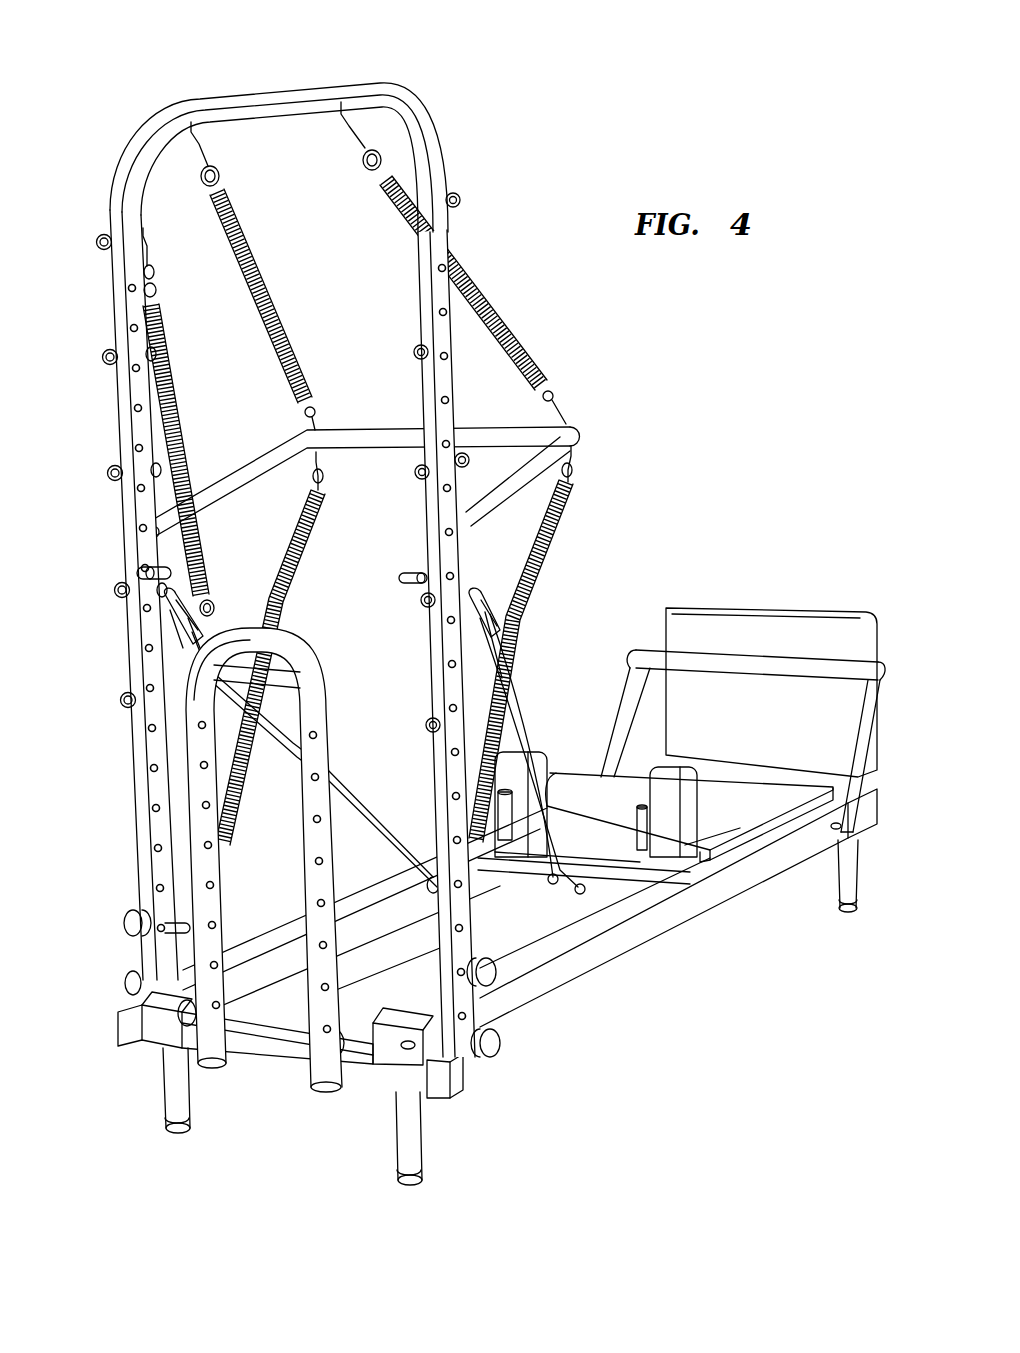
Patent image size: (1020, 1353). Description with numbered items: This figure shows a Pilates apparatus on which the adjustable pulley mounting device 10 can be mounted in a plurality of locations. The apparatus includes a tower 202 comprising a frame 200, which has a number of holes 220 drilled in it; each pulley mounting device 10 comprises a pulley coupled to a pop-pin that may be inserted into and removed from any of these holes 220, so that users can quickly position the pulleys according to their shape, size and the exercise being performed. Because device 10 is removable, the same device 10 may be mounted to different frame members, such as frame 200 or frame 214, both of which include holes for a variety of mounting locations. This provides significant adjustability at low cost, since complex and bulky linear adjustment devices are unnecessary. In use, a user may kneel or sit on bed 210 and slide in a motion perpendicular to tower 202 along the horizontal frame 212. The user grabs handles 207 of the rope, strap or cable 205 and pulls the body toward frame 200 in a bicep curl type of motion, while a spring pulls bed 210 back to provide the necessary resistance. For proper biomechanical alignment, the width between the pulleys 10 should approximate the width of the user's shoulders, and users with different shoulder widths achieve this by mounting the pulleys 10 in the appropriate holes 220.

The adjustable pulley mounting device 10 is at (156, 624).
The frame 200 is at (113, 195).
The tower 202 is at (212, 82).
The rope, strap or cable 205 is at (368, 802).
The handles 207 is at (672, 860).
The bed 210 is at (752, 800).
The horizontal frame 212 is at (258, 945).
The frame 214 is at (300, 655).
The holes 220 is at (130, 289).